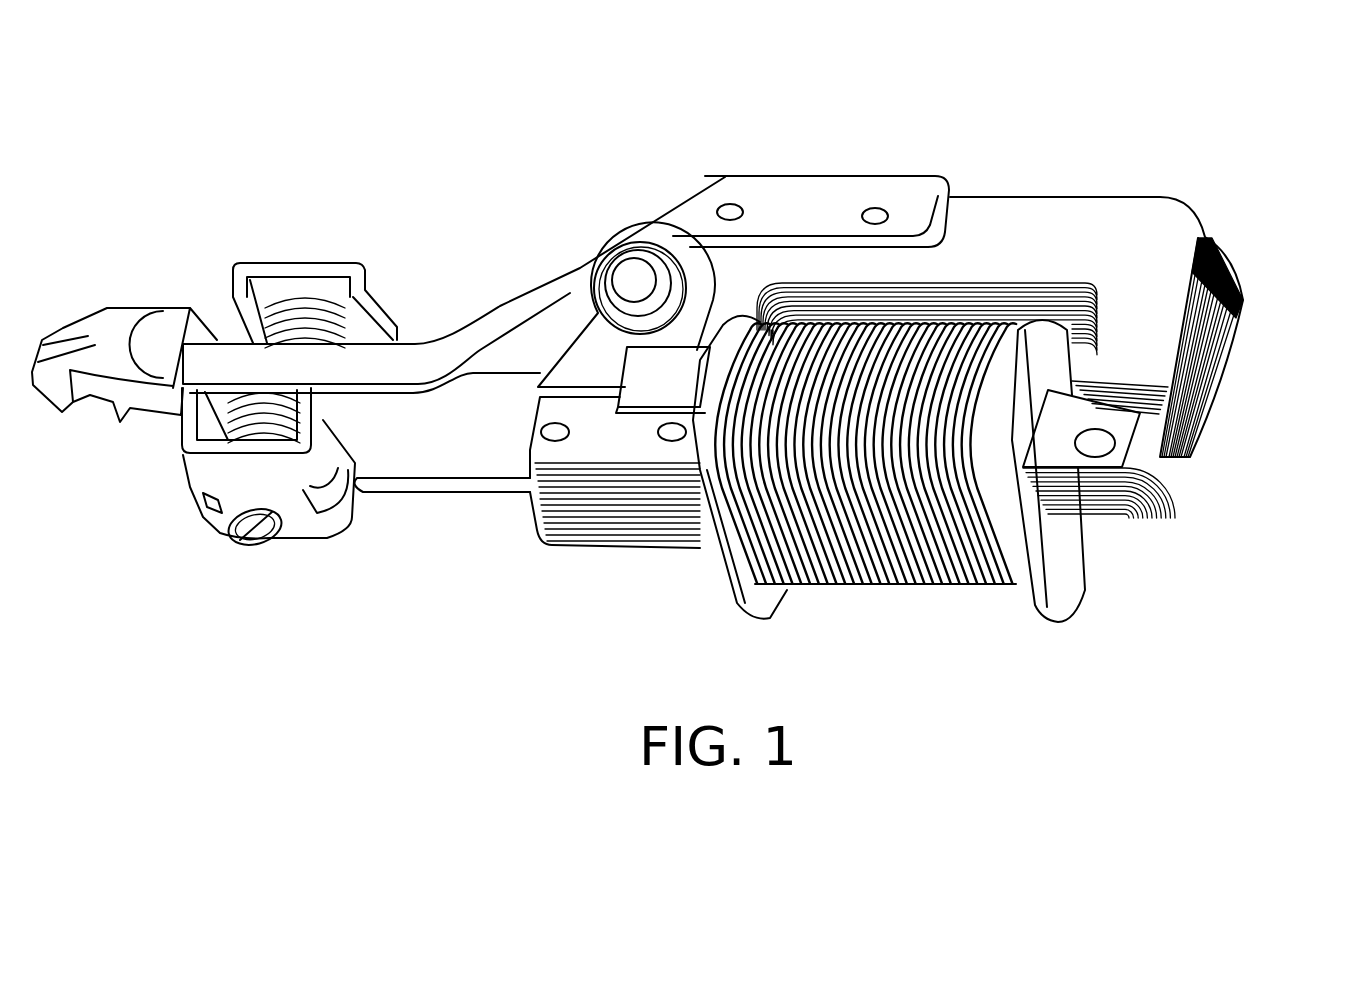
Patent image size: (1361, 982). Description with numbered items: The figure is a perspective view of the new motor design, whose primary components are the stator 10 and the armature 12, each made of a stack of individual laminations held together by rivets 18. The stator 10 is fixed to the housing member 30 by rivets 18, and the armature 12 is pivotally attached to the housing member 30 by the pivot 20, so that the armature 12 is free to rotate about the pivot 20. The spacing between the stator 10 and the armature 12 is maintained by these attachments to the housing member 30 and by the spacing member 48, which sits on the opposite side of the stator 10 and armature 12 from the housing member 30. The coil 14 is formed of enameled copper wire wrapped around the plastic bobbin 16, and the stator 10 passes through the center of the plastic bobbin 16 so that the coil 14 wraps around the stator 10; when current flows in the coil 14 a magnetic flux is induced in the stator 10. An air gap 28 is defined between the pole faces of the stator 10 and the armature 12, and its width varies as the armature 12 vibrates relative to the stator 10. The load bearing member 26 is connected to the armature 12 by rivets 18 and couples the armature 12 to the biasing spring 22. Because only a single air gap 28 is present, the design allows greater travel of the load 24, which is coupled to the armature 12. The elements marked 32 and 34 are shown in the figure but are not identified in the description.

The stator 10 is at (1183, 482).
The armature 12 is at (1182, 241).
The coil 14 is at (927, 563).
The plastic bobbin 16 is at (1047, 590).
The rivets 18 is at (736, 207).
The pivot 20 is at (634, 272).
The biasing spring 22 is at (303, 300).
The load 24 is at (102, 320).
The load bearing member 26 is at (523, 278).
The air gap 28 is at (1215, 398).
The housing member 30 is at (440, 457).
The bracket 32 is at (378, 297).
The screw 34 is at (243, 543).
The spacing member 48 is at (603, 433).